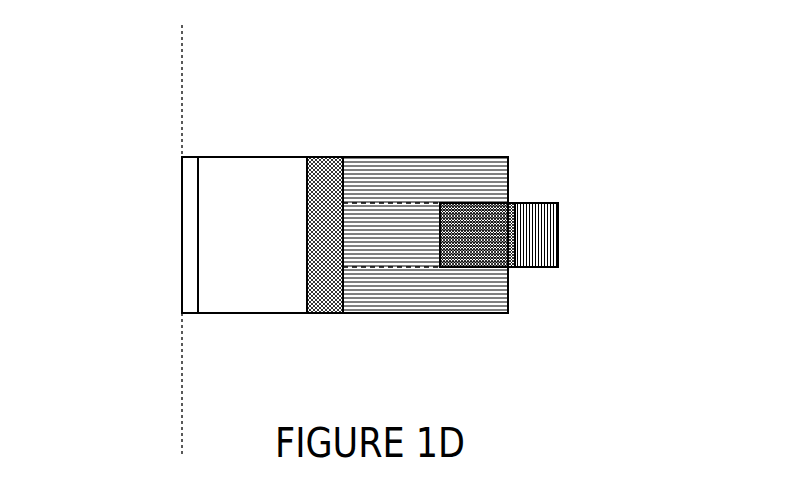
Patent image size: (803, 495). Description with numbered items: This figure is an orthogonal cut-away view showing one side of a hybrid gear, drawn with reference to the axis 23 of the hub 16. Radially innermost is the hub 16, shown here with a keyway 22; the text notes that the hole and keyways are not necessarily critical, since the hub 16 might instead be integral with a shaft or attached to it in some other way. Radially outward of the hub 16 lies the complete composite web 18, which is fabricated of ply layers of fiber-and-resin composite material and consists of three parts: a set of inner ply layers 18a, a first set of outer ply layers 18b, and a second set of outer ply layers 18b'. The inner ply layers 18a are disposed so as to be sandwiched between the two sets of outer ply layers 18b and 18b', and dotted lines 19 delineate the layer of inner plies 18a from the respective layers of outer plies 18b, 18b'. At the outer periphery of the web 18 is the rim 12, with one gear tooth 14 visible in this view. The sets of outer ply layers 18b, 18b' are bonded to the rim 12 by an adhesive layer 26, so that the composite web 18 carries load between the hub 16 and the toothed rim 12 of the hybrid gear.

The rim 12 is at (513, 203).
The gear tooth 14 is at (556, 203).
The hub portion 16 is at (325, 173).
The composite web 18 is at (441, 230).
The inner ply layers 18a is at (383, 230).
The first set of outer ply layers 18b is at (425, 138).
The second set of outer ply layers 18b' is at (425, 325).
The dotted lines 19 is at (414, 203).
The keyway 22 is at (197, 157).
The axis 23 is at (182, 102).
The adhesive layer 26 is at (468, 268).